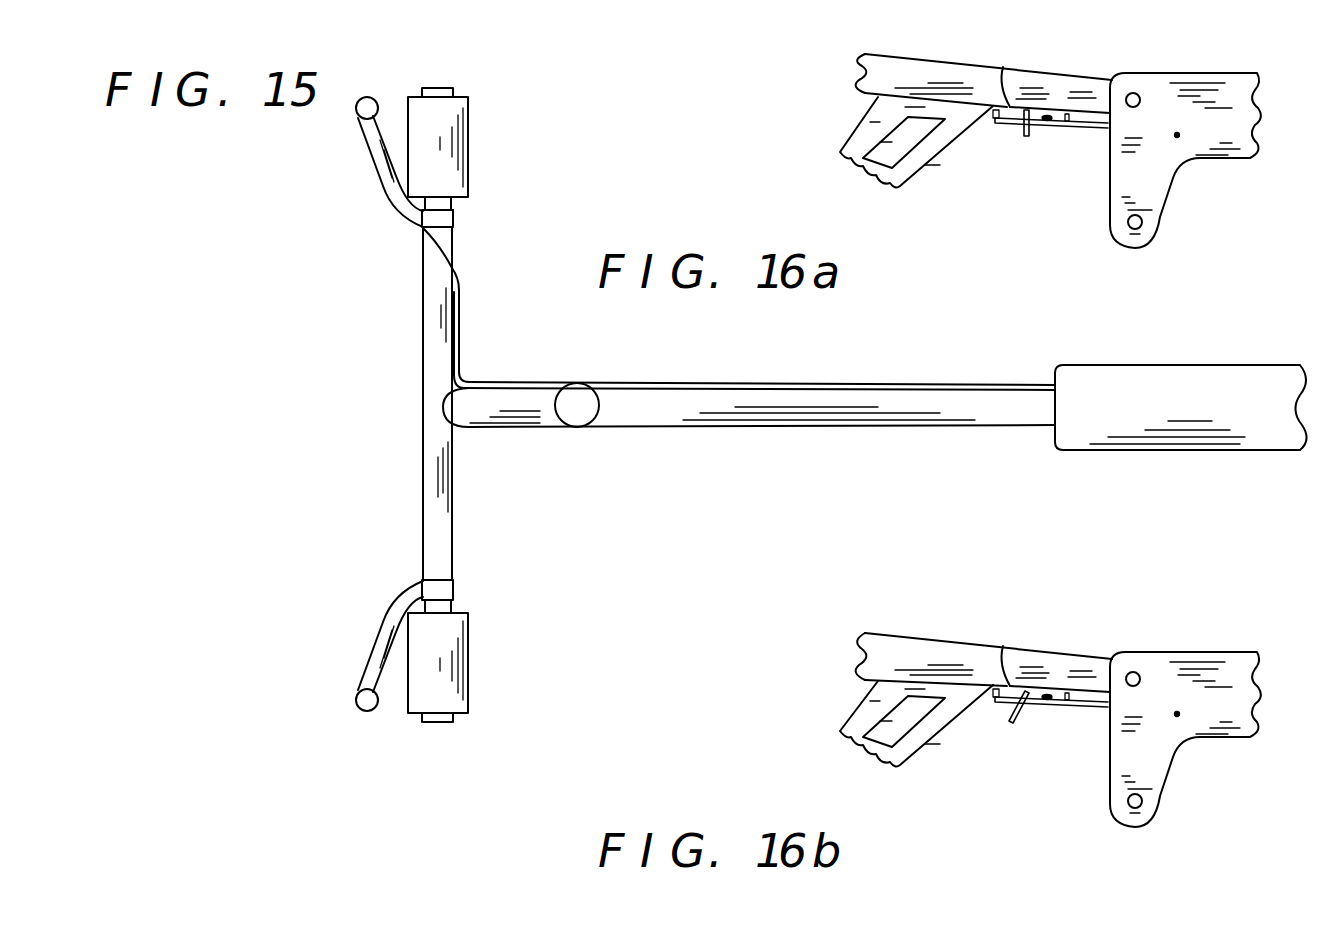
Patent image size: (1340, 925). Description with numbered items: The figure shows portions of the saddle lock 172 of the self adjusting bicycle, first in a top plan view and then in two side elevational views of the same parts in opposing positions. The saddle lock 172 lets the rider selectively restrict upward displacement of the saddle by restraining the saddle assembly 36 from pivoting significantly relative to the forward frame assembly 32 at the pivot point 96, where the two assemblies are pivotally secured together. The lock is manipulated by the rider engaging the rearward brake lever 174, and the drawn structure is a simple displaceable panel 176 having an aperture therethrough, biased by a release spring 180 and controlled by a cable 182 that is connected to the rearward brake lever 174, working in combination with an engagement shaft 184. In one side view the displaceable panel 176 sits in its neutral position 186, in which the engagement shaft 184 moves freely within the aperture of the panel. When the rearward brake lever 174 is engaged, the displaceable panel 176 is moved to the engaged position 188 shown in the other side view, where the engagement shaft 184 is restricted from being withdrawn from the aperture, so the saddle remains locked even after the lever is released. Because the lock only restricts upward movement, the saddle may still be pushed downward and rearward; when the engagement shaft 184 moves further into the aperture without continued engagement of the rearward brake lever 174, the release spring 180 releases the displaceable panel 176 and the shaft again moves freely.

In FIG. 15, the forward frame assembly 32 is at (838, 429).
In FIG. 16A, the forward frame assembly 32 is at (873, 108).
In FIG. 16B, the forward frame assembly 32 is at (957, 699).
In FIG. 15, the saddle assembly 36 is at (1191, 365).
In FIG. 16A, the saddle assembly 36 is at (1177, 192).
In FIG. 16B, the saddle assembly 36 is at (1185, 739).
In FIG. 16A, the pivot point 96 is at (1140, 97).
In FIG. 16B, the pivot point 96 is at (1167, 651).
In FIG. 16A, the saddle lock 172 is at (1027, 140).
In FIG. 16B, the saddle lock 172 is at (988, 720).
In FIG. 15, the rearward brake lever 174 is at (383, 186).
In FIG. 16A, the displaceable panel 176 is at (1045, 129).
In FIG. 16B, the displaceable panel 176 is at (1036, 740).
In FIG. 16A, the release spring 180 is at (1053, 113).
In FIG. 16B, the release spring 180 is at (1087, 656).
In FIG. 15, the cable 182 is at (765, 381).
In FIG. 16A, the cable 182 is at (1004, 68).
In FIG. 16B, the cable 182 is at (943, 619).
In FIG. 16A, the engagement shaft 184 is at (1085, 129).
In FIG. 16B, the engagement shaft 184 is at (1035, 769).
In FIG. 16A, the neutral position 186 is at (840, 217).
In FIG. 16B, the engaged position 188 is at (789, 801).